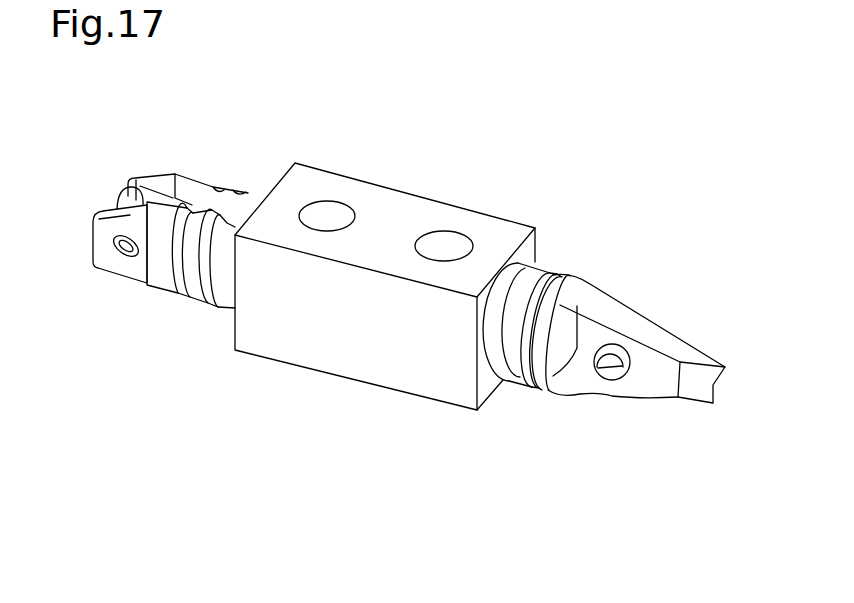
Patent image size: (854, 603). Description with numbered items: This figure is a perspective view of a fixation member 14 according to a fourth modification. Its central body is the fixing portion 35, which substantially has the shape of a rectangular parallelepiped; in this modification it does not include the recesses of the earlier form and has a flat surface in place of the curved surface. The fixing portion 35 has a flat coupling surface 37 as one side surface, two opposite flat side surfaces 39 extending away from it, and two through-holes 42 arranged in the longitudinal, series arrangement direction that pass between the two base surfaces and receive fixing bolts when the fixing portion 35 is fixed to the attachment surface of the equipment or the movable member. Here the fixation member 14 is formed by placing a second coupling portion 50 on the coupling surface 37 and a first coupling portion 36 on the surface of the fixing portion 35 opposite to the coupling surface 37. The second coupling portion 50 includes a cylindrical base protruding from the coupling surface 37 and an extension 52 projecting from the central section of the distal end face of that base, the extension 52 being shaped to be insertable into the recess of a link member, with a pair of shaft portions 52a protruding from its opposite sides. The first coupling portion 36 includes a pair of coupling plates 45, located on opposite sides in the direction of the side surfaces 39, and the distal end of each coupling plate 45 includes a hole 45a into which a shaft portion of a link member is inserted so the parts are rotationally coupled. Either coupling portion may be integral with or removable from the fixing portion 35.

The fixation member 14 is at (509, 118).
The fixing portion 35 is at (397, 190).
The first coupling portion 36 is at (199, 180).
The coupling surface 37 is at (535, 243).
The side surfaces 39 is at (499, 208).
The through-holes 42 is at (327, 206).
The coupling plates 45 is at (242, 188).
The hole 45a is at (127, 262).
The second coupling portion 50 is at (592, 278).
The extension 52 is at (677, 333).
The shaft portions 52a is at (612, 377).